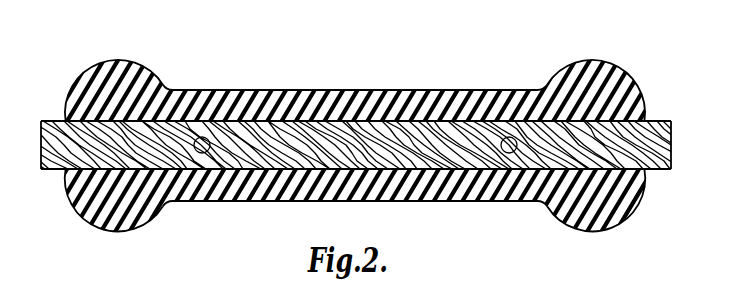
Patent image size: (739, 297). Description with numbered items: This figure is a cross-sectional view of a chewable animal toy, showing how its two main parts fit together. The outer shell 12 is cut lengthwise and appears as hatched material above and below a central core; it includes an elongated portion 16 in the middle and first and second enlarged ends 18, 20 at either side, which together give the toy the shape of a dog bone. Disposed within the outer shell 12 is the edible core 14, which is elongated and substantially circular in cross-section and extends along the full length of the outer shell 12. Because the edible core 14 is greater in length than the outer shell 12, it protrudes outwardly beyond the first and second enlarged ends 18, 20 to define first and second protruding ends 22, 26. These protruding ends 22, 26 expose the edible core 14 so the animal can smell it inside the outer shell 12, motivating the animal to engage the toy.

The outer shell 12 is at (369, 131).
The edible core 14 is at (369, 112).
The elongated portion 16 is at (402, 90).
The first enlarged end 18 is at (108, 60).
The second enlarged end 20 is at (616, 62).
The first protruding end 22 is at (62, 119).
The second protruding end 26 is at (662, 122).